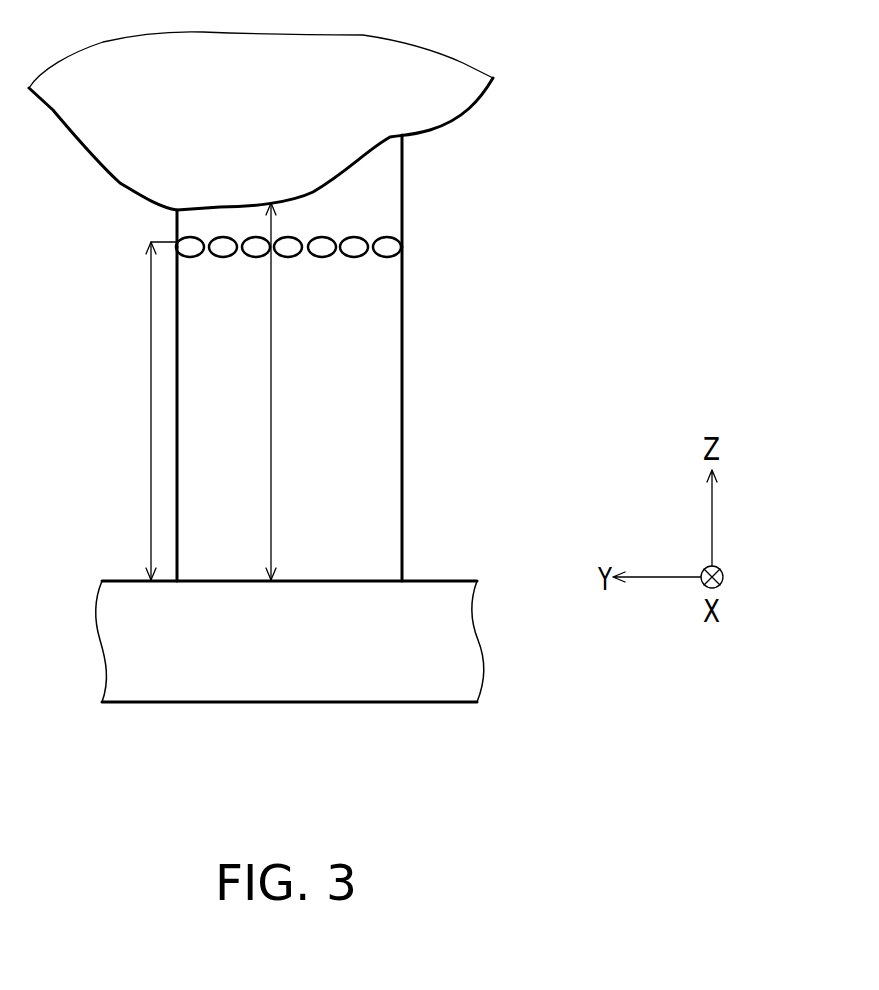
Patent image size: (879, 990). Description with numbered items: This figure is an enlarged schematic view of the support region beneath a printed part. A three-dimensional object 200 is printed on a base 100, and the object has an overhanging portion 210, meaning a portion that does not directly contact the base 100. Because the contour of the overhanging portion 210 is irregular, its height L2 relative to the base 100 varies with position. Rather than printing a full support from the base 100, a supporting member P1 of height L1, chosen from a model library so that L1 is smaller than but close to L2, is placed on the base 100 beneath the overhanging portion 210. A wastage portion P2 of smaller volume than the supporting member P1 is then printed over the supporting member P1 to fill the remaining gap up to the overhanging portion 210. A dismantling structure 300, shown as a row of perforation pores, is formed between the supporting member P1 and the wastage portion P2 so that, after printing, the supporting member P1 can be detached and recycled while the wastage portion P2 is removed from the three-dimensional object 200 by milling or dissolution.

The base 100 is at (467, 648).
The three-dimensional object 200 is at (288, 113).
The overhanging portion 210 is at (464, 119).
The dismantling structure 300 is at (389, 250).
The supporting member P1 is at (388, 518).
The wastage portion P2 is at (388, 218).
The height of the supporting member L1 is at (146, 411).
The height of the overhanging portion L2 is at (285, 391).